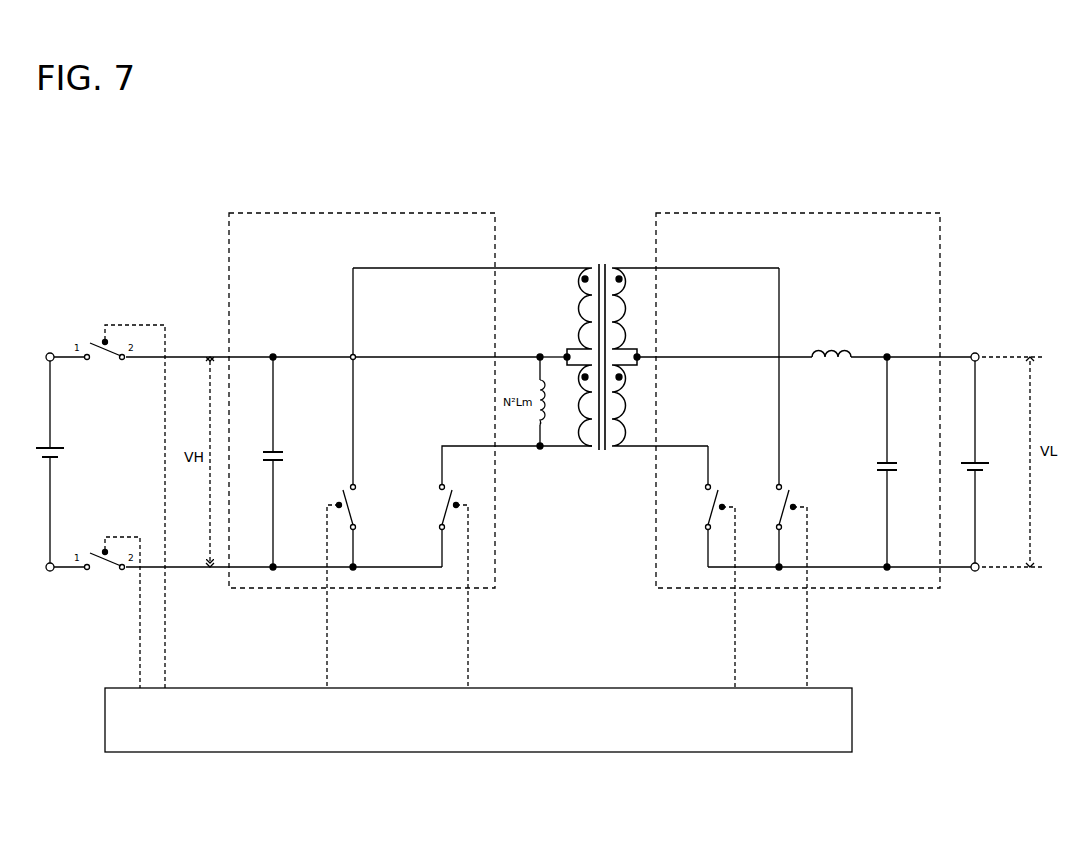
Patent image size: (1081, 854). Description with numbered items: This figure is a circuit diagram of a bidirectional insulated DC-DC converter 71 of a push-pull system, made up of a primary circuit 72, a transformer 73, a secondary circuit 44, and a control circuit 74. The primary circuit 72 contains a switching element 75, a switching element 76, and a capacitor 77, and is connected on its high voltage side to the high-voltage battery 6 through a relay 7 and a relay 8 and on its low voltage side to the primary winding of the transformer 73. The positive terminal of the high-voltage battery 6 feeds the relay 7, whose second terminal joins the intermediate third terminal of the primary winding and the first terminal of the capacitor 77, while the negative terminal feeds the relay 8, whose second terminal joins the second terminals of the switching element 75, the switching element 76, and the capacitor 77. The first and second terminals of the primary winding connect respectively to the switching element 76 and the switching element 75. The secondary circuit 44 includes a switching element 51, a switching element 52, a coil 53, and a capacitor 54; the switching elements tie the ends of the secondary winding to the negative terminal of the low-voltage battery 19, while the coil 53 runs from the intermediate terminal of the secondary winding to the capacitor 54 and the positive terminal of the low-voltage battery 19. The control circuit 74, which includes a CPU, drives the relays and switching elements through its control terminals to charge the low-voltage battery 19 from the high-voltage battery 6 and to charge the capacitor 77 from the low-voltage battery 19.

The high-voltage battery 6 is at (54, 448).
The relay 7 is at (103, 360).
The relay 8 is at (103, 570).
The low-voltage battery 19 is at (982, 462).
The secondary circuit 44 is at (797, 213).
The switching element 51 is at (779, 506).
The switching element 52 is at (706, 506).
The coil 53 is at (833, 366).
The capacitor 54 is at (892, 462).
The bidirectional insulated DC-DC converter 71 is at (566, 304).
The primary circuit 72 is at (367, 213).
The transformer 73 is at (603, 262).
The control circuit 74 is at (601, 688).
The switching element 75 is at (436, 506).
The switching element 76 is at (360, 506).
The capacitor 77 is at (268, 452).